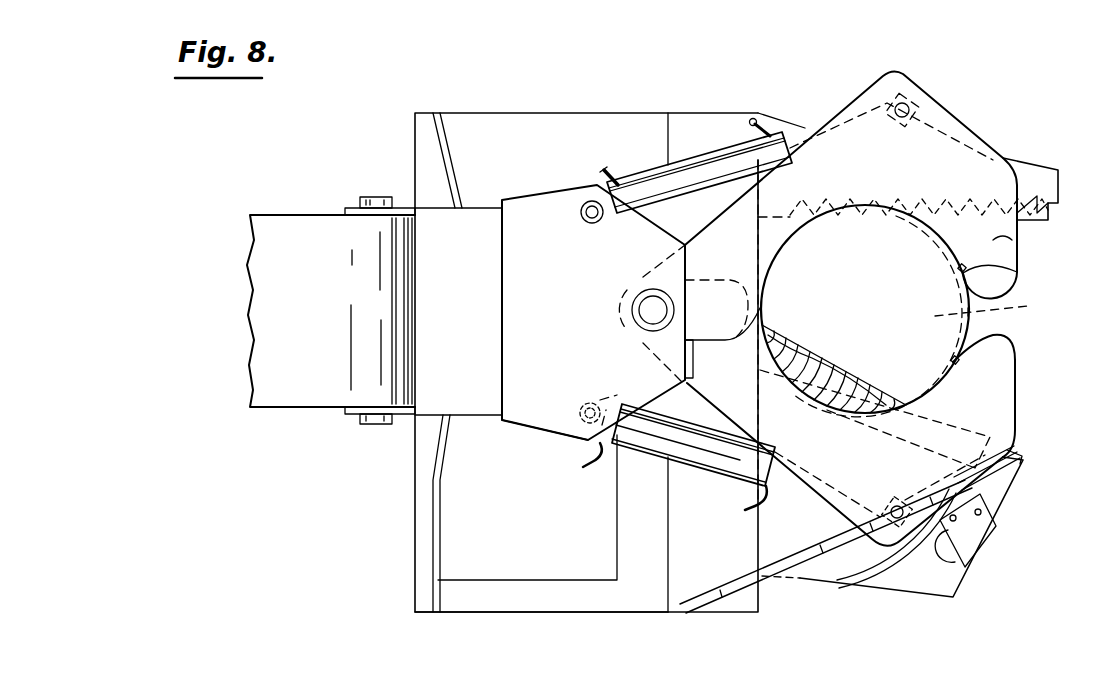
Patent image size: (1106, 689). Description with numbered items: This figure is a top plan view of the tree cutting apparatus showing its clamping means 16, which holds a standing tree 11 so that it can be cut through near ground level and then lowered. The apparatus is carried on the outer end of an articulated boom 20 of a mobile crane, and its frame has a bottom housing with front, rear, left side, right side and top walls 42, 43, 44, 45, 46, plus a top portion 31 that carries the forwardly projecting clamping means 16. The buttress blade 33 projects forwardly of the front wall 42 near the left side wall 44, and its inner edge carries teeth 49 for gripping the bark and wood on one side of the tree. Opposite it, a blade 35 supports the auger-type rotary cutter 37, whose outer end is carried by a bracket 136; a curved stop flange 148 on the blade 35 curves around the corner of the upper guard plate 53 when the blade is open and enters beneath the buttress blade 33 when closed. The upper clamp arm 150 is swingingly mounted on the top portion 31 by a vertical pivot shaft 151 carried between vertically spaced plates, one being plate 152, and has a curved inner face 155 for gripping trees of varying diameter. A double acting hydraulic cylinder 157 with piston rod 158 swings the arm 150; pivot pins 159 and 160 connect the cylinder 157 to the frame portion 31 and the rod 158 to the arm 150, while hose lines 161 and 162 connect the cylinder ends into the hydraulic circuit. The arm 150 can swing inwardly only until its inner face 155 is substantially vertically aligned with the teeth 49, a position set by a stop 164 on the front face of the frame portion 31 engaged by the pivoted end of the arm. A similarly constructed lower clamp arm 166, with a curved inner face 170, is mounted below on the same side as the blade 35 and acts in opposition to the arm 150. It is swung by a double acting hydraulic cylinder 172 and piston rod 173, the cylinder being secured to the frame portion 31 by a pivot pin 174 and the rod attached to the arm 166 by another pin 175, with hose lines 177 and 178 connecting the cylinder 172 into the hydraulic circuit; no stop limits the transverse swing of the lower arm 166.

The standing tree 11 is at (907, 311).
The clamping means 16 is at (1016, 130).
The articulated boom 20 is at (320, 393).
The top portion 31 is at (533, 412).
The buttress blade 33 is at (1035, 172).
The blade 35 is at (962, 580).
The rotary cutter 37 is at (823, 372).
The front wall 42 is at (758, 606).
The rear wall 43 is at (420, 486).
The left side wall 44 is at (570, 112).
The right side wall 45 is at (537, 614).
The top wall 46 is at (594, 597).
The teeth 49 is at (1058, 212).
The upper guard plate 53 is at (797, 583).
The bracket 136 is at (1024, 458).
The curved stop flange 148 is at (893, 565).
The upper clamp arm 150 is at (1018, 242).
The vertical pivot shaft 151 is at (640, 312).
The plate 152 is at (543, 200).
The inner face 155 is at (1018, 271).
The hydraulic cylinder 157 is at (718, 160).
The piston rod 158 is at (800, 128).
The pivot pin 159 is at (595, 223).
The pivot pin 160 is at (905, 104).
The hose line 161 is at (754, 118).
The hose line 162 is at (618, 168).
The stop 164 is at (702, 360).
The lower clamp arm 166 is at (993, 408).
The inner face 170 is at (957, 367).
The hydraulic cylinder 172 is at (714, 468).
The piston rod 173 is at (790, 485).
The pivot pin 174 is at (588, 402).
The pin 175 is at (895, 504).
The hose line 177 is at (748, 508).
The hose line 178 is at (587, 462).